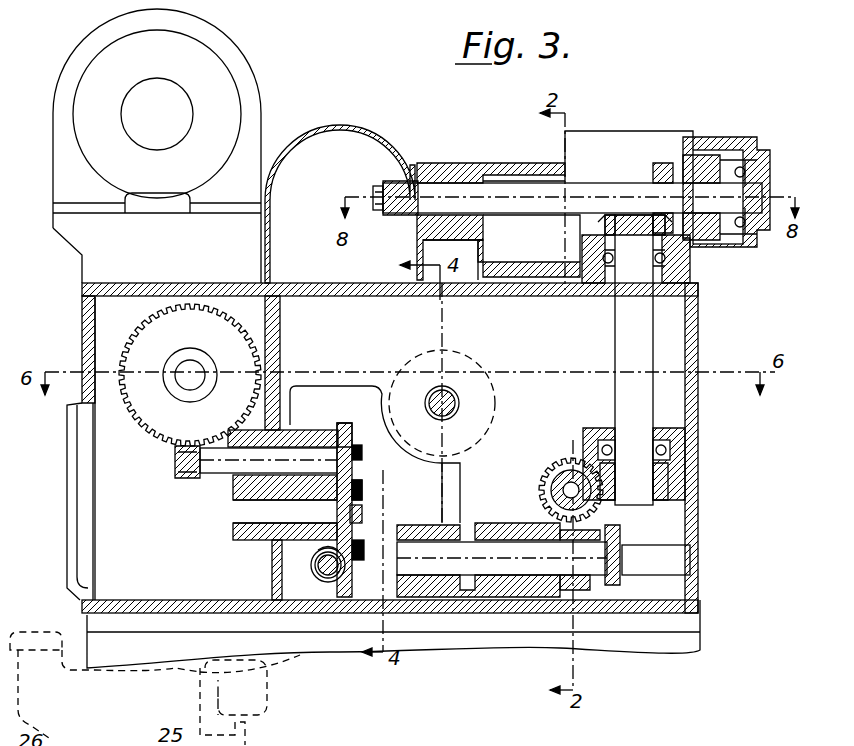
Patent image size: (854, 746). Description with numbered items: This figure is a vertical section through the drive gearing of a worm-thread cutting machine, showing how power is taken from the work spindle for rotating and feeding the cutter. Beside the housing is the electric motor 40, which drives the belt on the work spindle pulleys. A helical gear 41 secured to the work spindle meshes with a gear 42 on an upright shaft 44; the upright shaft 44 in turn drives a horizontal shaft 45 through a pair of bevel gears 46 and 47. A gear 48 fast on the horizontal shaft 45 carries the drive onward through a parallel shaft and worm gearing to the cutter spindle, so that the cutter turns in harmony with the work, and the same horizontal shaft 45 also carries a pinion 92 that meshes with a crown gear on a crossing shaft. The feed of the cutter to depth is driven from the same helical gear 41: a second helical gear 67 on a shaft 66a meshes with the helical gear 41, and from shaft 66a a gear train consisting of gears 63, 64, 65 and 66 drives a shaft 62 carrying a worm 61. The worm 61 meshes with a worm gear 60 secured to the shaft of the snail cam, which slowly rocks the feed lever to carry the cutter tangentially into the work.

The electric motor 40 is at (100, 62).
The helical gear 41 is at (550, 468).
The gear 42 is at (668, 488).
The upright shaft 44 is at (630, 303).
The horizontal shaft 45 is at (540, 200).
The bevel gear 46 is at (600, 222).
The bevel gear 47 is at (655, 172).
The gear 48 is at (700, 158).
The worm gear 60 is at (145, 405).
The worm 61 is at (183, 470).
The shaft 62 is at (222, 460).
The gear 63 is at (356, 414).
The gear 64 is at (356, 490).
The gear 65 is at (372, 520).
The gear 66 is at (339, 576).
The shaft 66a is at (462, 552).
The helical gear 67 is at (530, 528).
The pinion 92 is at (397, 212).